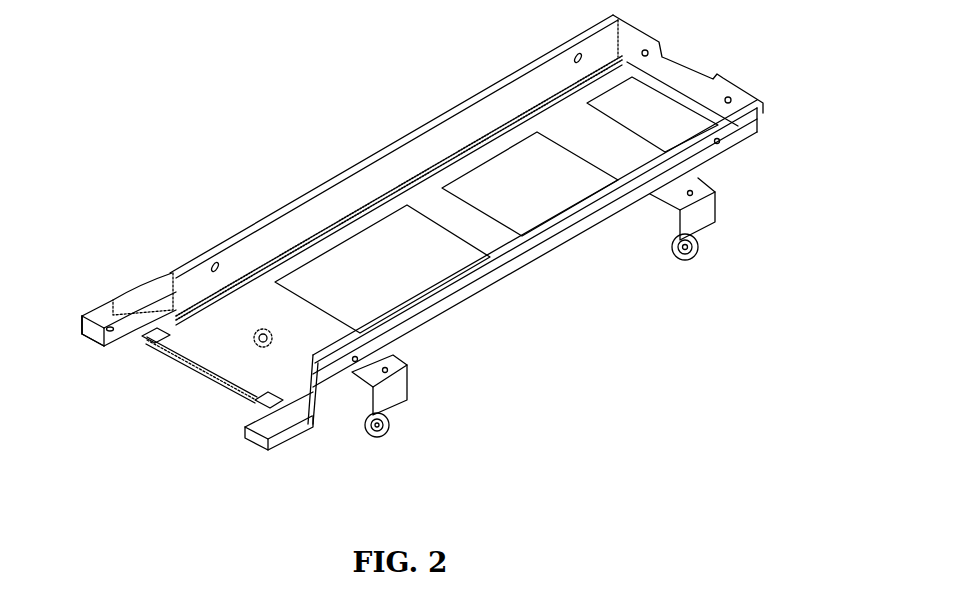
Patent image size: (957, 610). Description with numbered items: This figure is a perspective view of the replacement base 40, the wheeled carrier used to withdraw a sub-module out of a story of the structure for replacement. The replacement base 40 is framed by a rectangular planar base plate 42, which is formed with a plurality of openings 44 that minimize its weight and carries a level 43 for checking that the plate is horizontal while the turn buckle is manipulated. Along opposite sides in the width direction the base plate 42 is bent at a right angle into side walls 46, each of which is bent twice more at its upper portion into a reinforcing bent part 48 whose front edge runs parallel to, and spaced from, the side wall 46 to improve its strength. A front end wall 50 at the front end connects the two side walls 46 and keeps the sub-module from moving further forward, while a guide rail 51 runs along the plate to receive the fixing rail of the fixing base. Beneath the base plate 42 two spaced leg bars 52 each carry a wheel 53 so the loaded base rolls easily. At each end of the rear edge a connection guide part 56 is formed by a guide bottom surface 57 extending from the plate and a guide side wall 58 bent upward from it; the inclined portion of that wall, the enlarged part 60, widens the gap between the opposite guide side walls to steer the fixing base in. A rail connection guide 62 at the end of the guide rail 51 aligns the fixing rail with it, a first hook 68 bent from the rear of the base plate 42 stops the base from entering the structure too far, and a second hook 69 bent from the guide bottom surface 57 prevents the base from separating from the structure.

The replacement base 40 is at (573, 277).
The base plate 42 is at (250, 293).
The level 43 is at (270, 333).
The openings 44 is at (507, 167).
The side walls 46 is at (432, 147).
The reinforcing bent part 48 is at (310, 190).
The front end wall 50 is at (732, 78).
The guide rail 51 is at (373, 193).
The leg bar 52 is at (672, 228).
The wheel 53 is at (693, 257).
The connection guide part 56 is at (72, 333).
The guide bottom surface 57 is at (135, 318).
The guide side wall 58 is at (108, 298).
The enlarged part 60 is at (153, 280).
The rail connection guide 62 is at (147, 343).
The first hook 68 is at (190, 362).
The second hook 69 is at (103, 353).